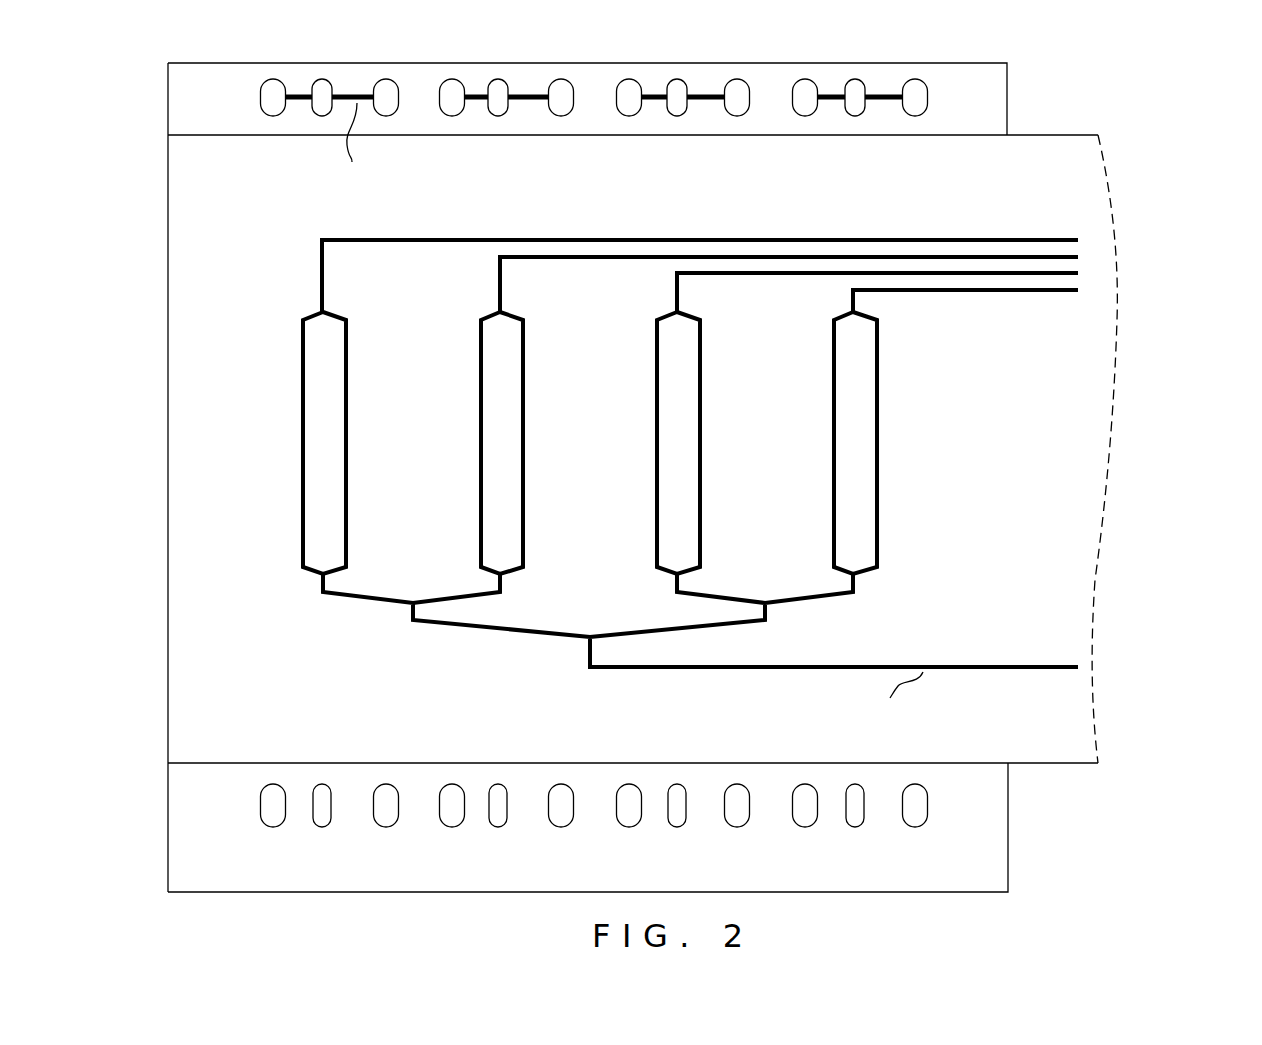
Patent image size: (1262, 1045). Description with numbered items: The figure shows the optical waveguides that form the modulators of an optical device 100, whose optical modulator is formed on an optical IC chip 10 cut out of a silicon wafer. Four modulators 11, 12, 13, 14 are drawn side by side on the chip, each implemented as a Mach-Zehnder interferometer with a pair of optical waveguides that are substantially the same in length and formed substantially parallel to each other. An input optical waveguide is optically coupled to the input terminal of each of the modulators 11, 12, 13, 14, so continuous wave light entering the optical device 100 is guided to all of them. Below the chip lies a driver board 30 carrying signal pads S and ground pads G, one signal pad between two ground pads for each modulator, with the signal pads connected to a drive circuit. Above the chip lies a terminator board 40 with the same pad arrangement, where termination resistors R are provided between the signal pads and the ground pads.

The optical device 100 is at (1161, 111).
The optical IC chip 10 is at (168, 450).
The modulator 11 is at (313, 370).
The modulator 12 is at (491, 370).
The modulator 13 is at (667, 370).
The modulator 14 is at (844, 370).
The driver board 30 is at (1008, 826).
The terminator board 40 is at (1007, 98).